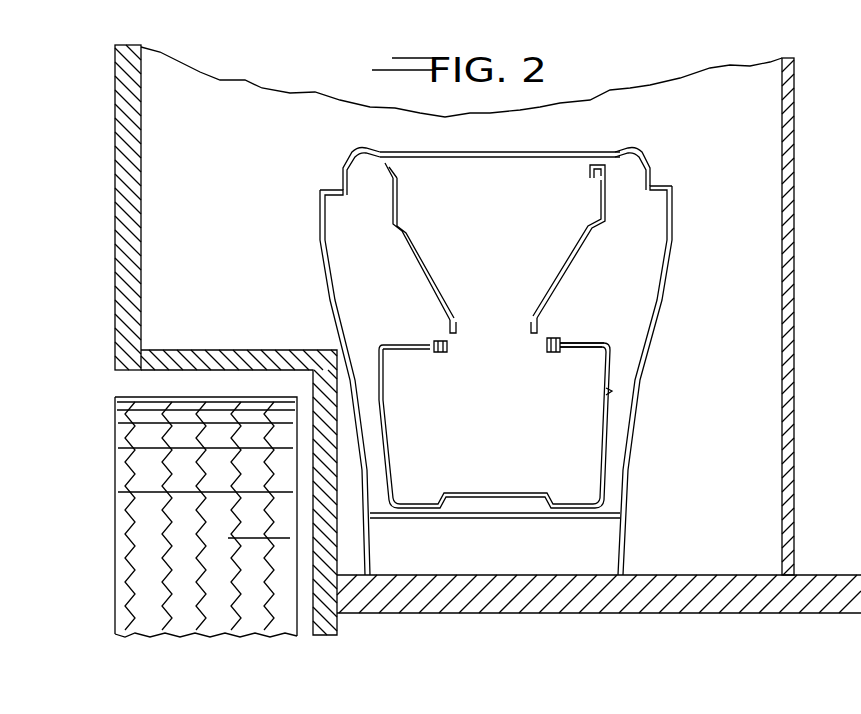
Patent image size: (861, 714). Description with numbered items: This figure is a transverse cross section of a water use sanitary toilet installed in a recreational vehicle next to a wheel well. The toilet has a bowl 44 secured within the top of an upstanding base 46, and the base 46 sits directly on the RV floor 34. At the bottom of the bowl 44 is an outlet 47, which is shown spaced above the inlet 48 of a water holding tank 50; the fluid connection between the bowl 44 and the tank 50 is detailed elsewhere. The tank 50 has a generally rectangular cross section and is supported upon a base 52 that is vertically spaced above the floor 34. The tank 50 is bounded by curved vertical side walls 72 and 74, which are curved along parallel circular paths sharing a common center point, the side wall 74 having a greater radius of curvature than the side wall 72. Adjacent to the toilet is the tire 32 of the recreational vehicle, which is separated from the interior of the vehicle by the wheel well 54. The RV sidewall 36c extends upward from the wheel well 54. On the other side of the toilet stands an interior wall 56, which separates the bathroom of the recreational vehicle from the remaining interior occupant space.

The tire 32 is at (113, 440).
The floor 34 is at (730, 575).
The RV sidewall 36c is at (144, 140).
The bowl 44 is at (422, 257).
The upstanding base 46 is at (319, 240).
The outlet 47 is at (530, 331).
The inlet 48 is at (547, 352).
The water holding tank 50 is at (584, 343).
The base 52 is at (527, 518).
The wheel well 54 is at (225, 350).
The interior wall 56 is at (796, 274).
The side wall 72 is at (390, 447).
The side wall 74 is at (599, 442).